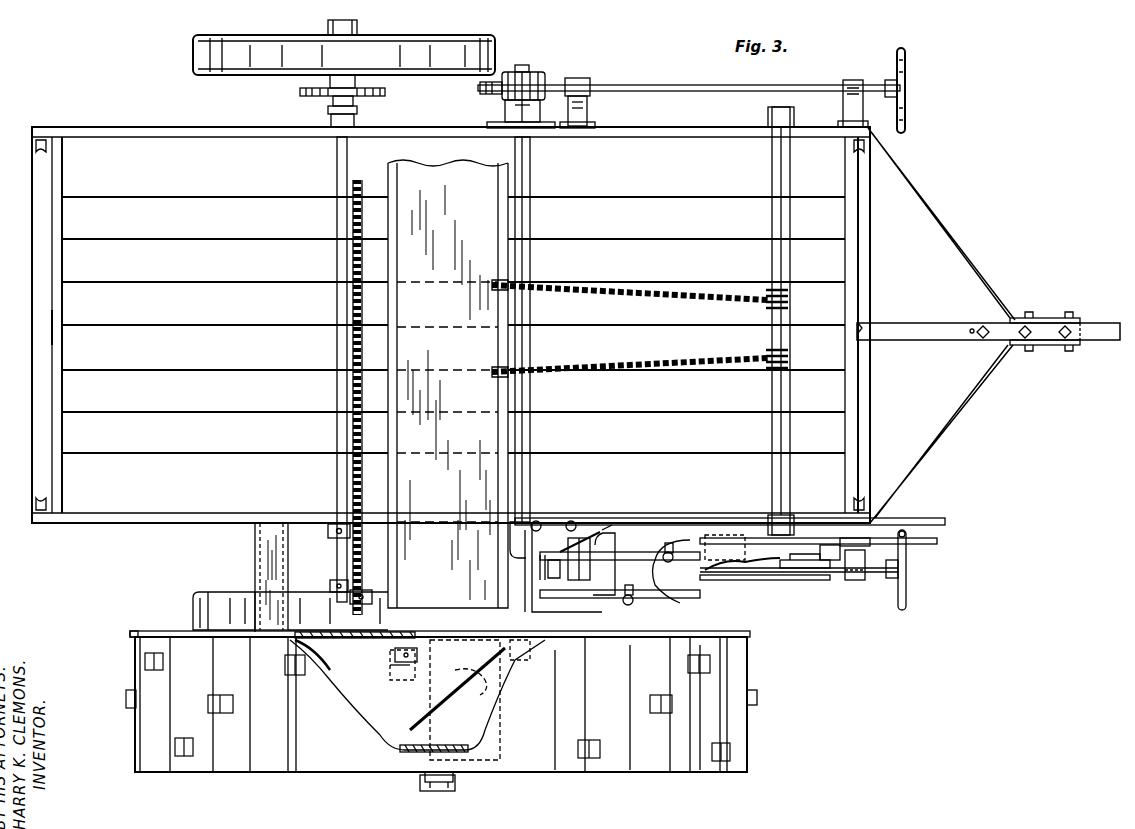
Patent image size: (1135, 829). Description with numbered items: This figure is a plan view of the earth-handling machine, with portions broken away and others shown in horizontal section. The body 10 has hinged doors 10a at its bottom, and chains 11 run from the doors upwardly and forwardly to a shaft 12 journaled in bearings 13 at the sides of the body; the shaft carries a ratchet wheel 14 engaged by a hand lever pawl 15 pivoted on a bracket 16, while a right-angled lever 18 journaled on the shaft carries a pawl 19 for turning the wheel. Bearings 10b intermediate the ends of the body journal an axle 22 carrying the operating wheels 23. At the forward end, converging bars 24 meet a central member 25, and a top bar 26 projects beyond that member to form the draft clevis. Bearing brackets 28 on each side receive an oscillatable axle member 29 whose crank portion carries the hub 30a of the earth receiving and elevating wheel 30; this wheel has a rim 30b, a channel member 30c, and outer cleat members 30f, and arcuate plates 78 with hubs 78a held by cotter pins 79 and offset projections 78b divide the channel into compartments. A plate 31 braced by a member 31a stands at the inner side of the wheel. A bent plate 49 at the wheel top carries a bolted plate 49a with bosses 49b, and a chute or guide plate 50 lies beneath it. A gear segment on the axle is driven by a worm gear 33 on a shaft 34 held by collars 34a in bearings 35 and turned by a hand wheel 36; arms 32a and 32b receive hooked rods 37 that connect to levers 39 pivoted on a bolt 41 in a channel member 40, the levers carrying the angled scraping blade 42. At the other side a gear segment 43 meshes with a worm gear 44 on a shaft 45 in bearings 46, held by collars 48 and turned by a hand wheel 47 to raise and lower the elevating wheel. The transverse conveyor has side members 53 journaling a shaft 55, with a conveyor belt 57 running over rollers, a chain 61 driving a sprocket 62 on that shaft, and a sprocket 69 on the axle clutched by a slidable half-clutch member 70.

The body 10 is at (50, 213).
The hinged doors 10a is at (40, 334).
The bearings 10b is at (332, 534).
The chains 11 is at (666, 358).
The shaft 12 is at (761, 348).
The bearings 13 is at (770, 128).
The ratchet wheel 14 is at (780, 572).
The hand lever pawl 15 is at (733, 572).
The bracket 16 is at (712, 536).
The lever 18 is at (915, 540).
The pawl 19 is at (810, 576).
The axle 22 is at (337, 303).
The operating wheels 23 is at (193, 58).
The converging bars 24 is at (955, 422).
The central member 25 is at (958, 340).
The top bar 26 is at (927, 326).
The bearing brackets 28 is at (505, 113).
The axle member 29 is at (530, 430).
The earth receiving and elevating wheel 30 is at (616, 762).
The hub 30a is at (420, 788).
The rim 30b is at (275, 769).
The channel member 30c is at (478, 737).
The cleat members 30f is at (758, 704).
The plate 31 is at (148, 635).
The member 31a is at (255, 547).
The arm 32a is at (617, 590).
The arm 32b is at (599, 554).
The worm gear 33 is at (545, 582).
The shaft 34 is at (762, 582).
The collars 34a is at (608, 575).
The bearings 35 is at (579, 582).
The hand wheel 36 is at (906, 592).
The rods 37 is at (636, 602).
The bars or levers 39 is at (694, 545).
The channel member 40 is at (830, 562).
The bolt 41 is at (870, 546).
The scraping member or blade 42 is at (605, 533).
The gear segment 43 is at (480, 90).
The worm gear 44 is at (525, 78).
The shaft 45 is at (650, 86).
The bearings 46 is at (588, 110).
The hand wheel 47 is at (905, 100).
The collars 48 is at (582, 86).
The plate 49 is at (471, 690).
The plate 49a is at (538, 521).
The bosses or hubs 49b is at (573, 522).
The chute or guide plate 50 is at (390, 645).
The members 53 is at (398, 303).
The shaft 55 is at (372, 578).
The conveyor belt 57 is at (460, 431).
The chain 61 is at (356, 478).
The sprocket 62 is at (364, 602).
The sprocket 69 is at (300, 93).
The half-clutch member 70 is at (357, 113).
The plates 78 is at (442, 720).
The hubs 78a is at (525, 686).
The projections 78b is at (515, 706).
The cotter pins 79 is at (530, 648).